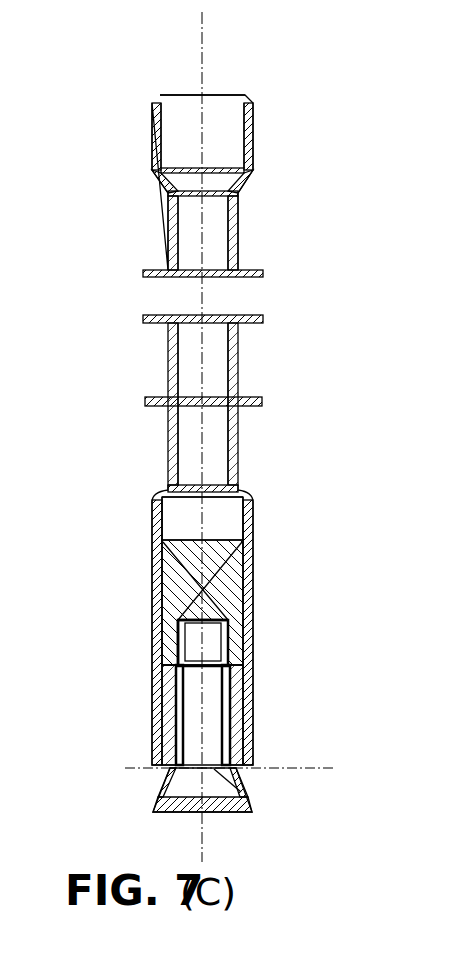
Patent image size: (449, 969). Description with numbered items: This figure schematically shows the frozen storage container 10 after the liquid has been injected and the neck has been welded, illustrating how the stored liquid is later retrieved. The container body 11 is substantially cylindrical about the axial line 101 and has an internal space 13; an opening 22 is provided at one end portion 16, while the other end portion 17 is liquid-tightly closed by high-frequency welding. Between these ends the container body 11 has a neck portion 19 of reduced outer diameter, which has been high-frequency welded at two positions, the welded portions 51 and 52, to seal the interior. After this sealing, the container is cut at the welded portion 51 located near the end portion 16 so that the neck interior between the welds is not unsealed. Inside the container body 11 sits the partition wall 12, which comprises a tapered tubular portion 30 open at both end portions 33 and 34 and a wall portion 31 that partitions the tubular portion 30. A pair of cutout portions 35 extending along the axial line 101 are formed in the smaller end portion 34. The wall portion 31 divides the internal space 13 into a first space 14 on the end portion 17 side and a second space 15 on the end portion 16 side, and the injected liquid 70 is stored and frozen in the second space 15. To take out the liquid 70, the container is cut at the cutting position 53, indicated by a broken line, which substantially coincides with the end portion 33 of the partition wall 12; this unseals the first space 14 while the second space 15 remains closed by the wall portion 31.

The frozen storage container 10 is at (284, 100).
The axial line 101 is at (206, 46).
The opening 22 is at (178, 94).
The end portion 16 is at (216, 95).
The neck portion 19 is at (239, 230).
The welded portion 51 is at (263, 274).
The container body 11 is at (248, 364).
The welded portion 52 is at (263, 401).
The internal space 13 is at (62, 545).
The liquid 70 is at (236, 540).
The second space 15 is at (196, 561).
The end portion 34 is at (224, 607).
The partition wall 12 is at (232, 645).
The cutout portion 35 is at (180, 628).
The wall portion 31 is at (176, 652).
The first space 14 is at (196, 718).
The tubular portion 30 is at (180, 740).
The cutting position 53 is at (322, 768).
The end portion 33 is at (244, 792).
The end portion 17 is at (222, 814).